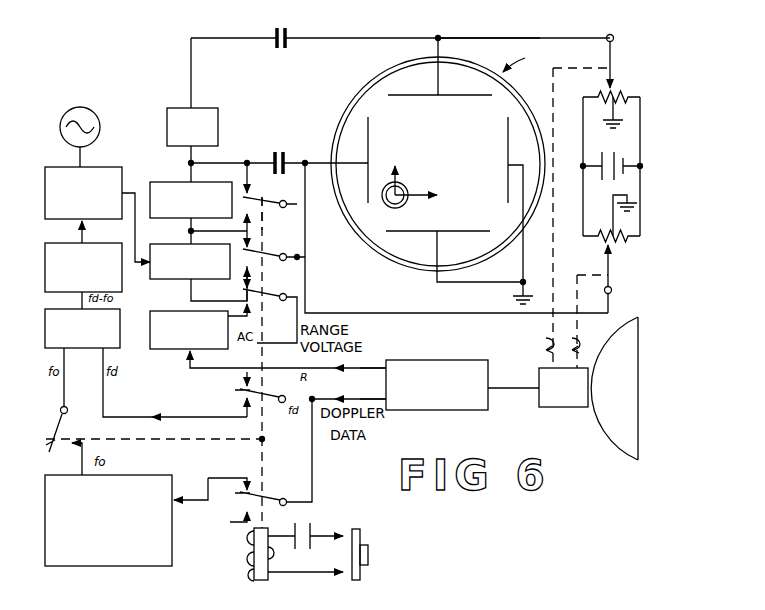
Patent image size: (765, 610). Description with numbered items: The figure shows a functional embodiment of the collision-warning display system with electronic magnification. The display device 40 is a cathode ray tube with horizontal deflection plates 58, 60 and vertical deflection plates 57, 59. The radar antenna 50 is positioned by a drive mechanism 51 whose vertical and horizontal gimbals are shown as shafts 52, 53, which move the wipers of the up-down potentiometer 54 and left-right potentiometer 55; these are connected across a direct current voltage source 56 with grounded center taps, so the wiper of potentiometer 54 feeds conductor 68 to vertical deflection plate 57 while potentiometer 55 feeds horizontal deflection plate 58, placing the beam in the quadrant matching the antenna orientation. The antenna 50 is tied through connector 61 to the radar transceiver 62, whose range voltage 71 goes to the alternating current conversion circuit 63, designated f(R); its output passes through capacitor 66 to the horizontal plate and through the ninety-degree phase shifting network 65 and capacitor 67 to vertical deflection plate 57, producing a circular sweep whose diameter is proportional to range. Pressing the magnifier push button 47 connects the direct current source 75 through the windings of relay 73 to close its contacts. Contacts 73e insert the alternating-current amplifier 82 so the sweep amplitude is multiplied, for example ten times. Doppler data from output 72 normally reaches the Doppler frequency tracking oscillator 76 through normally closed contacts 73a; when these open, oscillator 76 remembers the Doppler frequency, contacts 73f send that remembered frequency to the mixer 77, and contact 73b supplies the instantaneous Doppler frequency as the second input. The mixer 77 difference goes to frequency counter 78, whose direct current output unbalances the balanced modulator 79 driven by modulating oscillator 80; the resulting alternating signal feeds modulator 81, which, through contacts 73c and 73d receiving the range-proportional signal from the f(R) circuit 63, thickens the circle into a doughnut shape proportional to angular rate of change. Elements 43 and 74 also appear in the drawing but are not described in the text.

The display device 40 is at (446, 174).
The spot on oscilloscope screen 43 is at (402, 186).
The magnifier push button 47 is at (364, 540).
The radar antenna 50 is at (594, 418).
The drive mechanism 51 is at (576, 408).
The shaft 52 is at (552, 322).
The shaft 53 is at (578, 360).
The up-down potentiometer 54 is at (600, 96).
The left-right potentiometer 55 is at (600, 246).
The direct current voltage source 56 is at (602, 160).
The vertical deflection plate 57 is at (442, 96).
The horizontal deflection plate 58 is at (372, 121).
The vertical deflection plate 59 is at (430, 231).
The horizontal deflection plate 60 is at (505, 188).
The connector 61 is at (500, 388).
The radar transceiver 62 is at (426, 360).
The alternating current conversion circuit 63 is at (150, 330).
The phase shifting network 65 is at (170, 108).
The capacitor 66 is at (280, 152).
The capacitor 67 is at (286, 30).
The conductor 68 is at (522, 38).
The connector 71 is at (386, 368).
The output 72 is at (337, 398).
The relay 73 is at (252, 560).
The normally closed contacts 73a is at (264, 499).
The relay contact 73b is at (224, 392).
The relay contacts 73c is at (290, 296).
The relay contacts 73d is at (290, 254).
The contacts 73e is at (250, 202).
The contacts 73f is at (65, 433).
The relay linkage 74 is at (262, 213).
The direct current source 75 is at (311, 531).
The Doppler frequency tracking oscillator 76 is at (130, 475).
The mixer 77 is at (86, 348).
The frequency counter 78 is at (88, 243).
The balanced modulator 79 is at (90, 167).
The modulating oscillator 80 is at (100, 118).
The modulator 81 is at (150, 276).
The alternating-current amplifier 82 is at (151, 192).